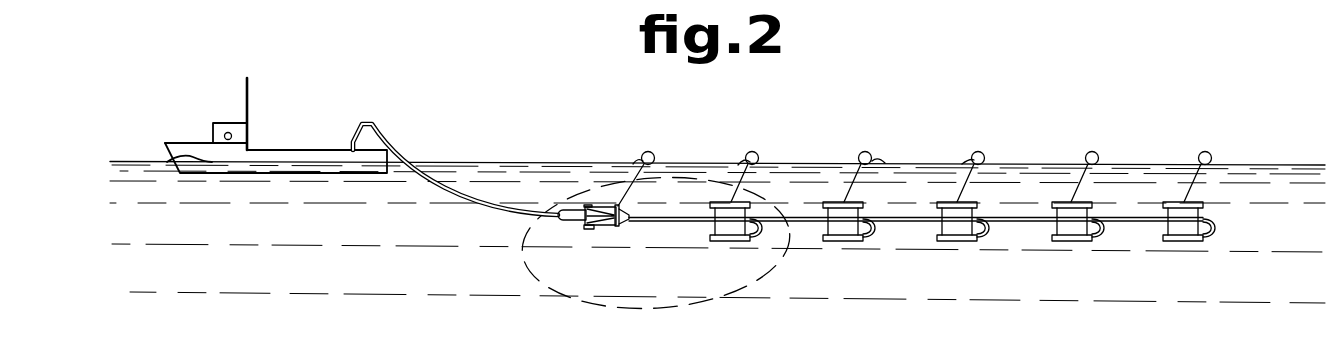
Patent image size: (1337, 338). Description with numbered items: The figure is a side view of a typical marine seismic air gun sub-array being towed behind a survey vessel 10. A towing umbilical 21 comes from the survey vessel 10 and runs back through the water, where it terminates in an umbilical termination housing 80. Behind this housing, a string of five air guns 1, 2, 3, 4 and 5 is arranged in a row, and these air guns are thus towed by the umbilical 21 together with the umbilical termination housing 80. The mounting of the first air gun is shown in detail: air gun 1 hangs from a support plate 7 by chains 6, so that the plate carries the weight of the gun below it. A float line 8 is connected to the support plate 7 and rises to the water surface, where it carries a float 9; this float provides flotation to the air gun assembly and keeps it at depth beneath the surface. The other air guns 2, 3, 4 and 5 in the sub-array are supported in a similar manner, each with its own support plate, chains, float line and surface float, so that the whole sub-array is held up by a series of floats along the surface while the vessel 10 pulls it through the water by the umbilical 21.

The survey vessel 10 is at (319, 150).
The towing umbilical 21 is at (453, 193).
The umbilical termination housing 80 is at (565, 222).
The float line 8 is at (657, 165).
The float 9 is at (860, 156).
The support plate 7 is at (752, 194).
The chains 6 is at (712, 230).
The air gun 1 is at (733, 243).
The air gun 2 is at (850, 241).
The air gun 3 is at (957, 242).
The air gun 4 is at (1071, 242).
The air gun 5 is at (1187, 242).